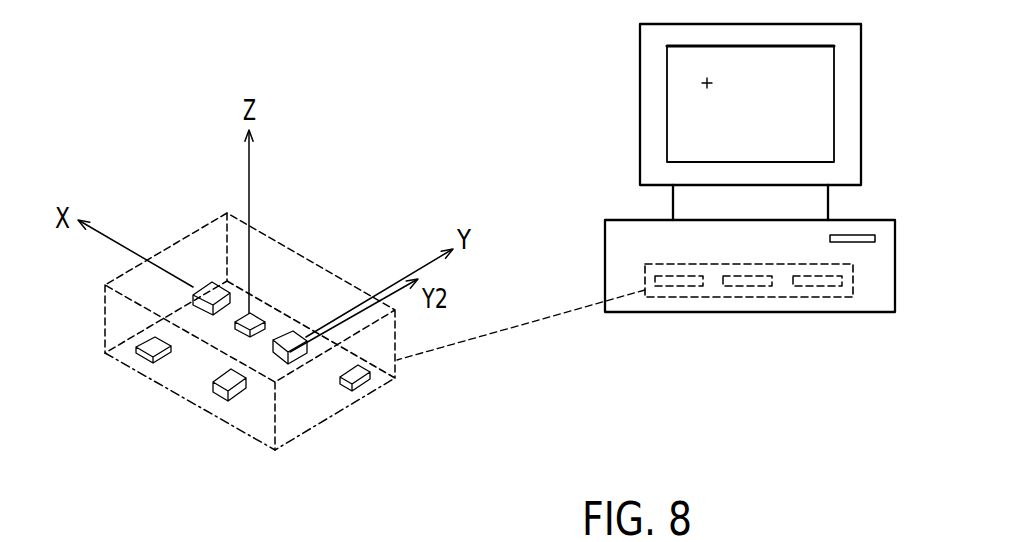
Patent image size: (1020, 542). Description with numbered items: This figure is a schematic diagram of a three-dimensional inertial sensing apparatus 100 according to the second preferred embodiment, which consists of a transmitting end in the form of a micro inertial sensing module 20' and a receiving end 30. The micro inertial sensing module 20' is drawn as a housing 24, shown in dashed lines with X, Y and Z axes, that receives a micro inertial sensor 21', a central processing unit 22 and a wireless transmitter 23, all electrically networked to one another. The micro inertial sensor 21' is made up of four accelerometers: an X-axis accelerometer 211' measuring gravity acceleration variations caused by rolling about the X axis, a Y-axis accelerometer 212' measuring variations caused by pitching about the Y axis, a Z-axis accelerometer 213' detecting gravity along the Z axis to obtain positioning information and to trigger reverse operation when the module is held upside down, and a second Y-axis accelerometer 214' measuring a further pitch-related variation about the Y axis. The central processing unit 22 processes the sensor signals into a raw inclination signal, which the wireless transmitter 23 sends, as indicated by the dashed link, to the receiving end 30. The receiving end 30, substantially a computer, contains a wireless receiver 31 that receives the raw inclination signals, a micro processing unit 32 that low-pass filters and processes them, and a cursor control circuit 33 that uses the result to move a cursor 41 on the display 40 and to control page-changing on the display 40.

The three-dimensional inertial sensing apparatus 100 is at (371, 52).
The micro inertial sensing module 20' is at (251, 320).
The housing 24 is at (294, 249).
The central processing unit 22 is at (146, 355).
The wireless transmitter 23 is at (362, 386).
The micro inertial sensor 21' is at (237, 412).
The X-axis accelerometer 211' is at (171, 389).
The Z-axis accelerometer 213' is at (221, 405).
The second Y-axis accelerometer 214' is at (255, 433).
The Y-axis accelerometer 212' is at (320, 414).
The receiving end 30 is at (636, 276).
The wireless receiver 31 is at (678, 287).
The micro processing unit 32 is at (745, 287).
The cursor control circuit 33 is at (817, 287).
The display 40 is at (640, 50).
The cursor 41 is at (705, 84).